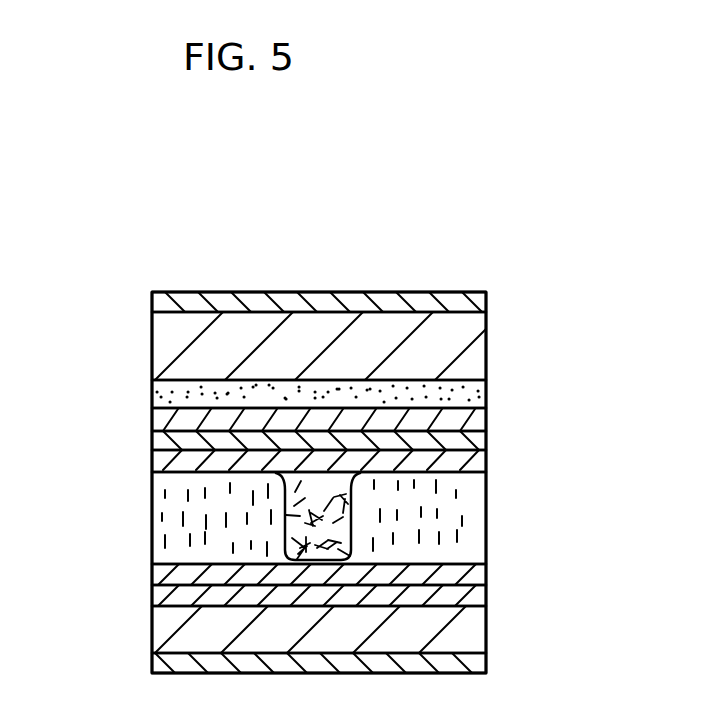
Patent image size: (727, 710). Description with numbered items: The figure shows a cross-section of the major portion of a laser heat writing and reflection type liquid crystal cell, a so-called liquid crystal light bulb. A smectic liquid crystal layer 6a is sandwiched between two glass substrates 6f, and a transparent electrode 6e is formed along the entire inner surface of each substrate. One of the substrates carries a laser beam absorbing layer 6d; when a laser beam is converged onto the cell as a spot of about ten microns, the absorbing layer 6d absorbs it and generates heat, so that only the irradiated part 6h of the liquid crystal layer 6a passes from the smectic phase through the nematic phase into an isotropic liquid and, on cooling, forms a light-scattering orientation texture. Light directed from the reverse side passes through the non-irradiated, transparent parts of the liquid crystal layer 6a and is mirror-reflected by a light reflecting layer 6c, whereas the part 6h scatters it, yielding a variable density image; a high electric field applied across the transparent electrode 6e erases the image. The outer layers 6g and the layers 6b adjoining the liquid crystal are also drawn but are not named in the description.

The smectic liquid crystal layer 6a is at (482, 518).
The alignment layer 6b is at (488, 461).
The light reflecting layer 6c is at (488, 438).
The laser beam absorbing layer 6d is at (158, 400).
The transparent electrode 6e is at (488, 414).
The glass substrate 6f is at (158, 352).
The polarizer plate 6g is at (488, 303).
The irradiated part 6h is at (285, 504).